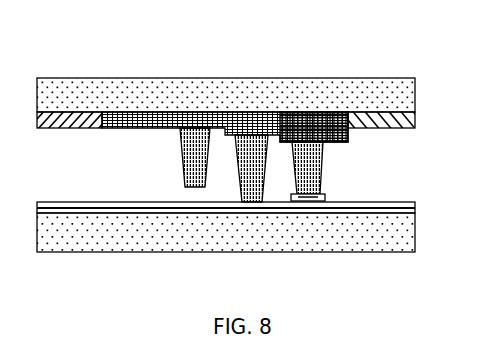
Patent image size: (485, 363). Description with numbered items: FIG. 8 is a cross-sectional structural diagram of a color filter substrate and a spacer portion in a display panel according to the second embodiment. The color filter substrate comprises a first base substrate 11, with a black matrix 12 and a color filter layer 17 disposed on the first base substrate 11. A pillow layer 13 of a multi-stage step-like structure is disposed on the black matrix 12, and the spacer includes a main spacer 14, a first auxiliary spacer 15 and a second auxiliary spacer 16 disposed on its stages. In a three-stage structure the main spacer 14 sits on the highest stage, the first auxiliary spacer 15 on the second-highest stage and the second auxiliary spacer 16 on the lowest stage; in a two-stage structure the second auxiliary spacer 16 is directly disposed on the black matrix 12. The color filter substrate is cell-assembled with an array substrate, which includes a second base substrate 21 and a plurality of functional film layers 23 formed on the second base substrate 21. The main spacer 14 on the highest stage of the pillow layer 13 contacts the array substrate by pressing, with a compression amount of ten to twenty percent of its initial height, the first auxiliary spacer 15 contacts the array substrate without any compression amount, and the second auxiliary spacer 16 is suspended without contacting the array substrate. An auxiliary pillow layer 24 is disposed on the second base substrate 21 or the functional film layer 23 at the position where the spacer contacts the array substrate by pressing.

The first base substrate 11 is at (110, 104).
The black matrix 12 is at (162, 114).
The pillow layer 13 is at (336, 140).
The main spacer 14 is at (348, 116).
The first auxiliary spacer 15 is at (253, 141).
The second auxiliary spacer 16 is at (202, 138).
The color filter layer 17 is at (42, 126).
The second base substrate 21 is at (88, 230).
The functional film layers 23 is at (206, 210).
The auxiliary pillow layer 24 is at (296, 201).